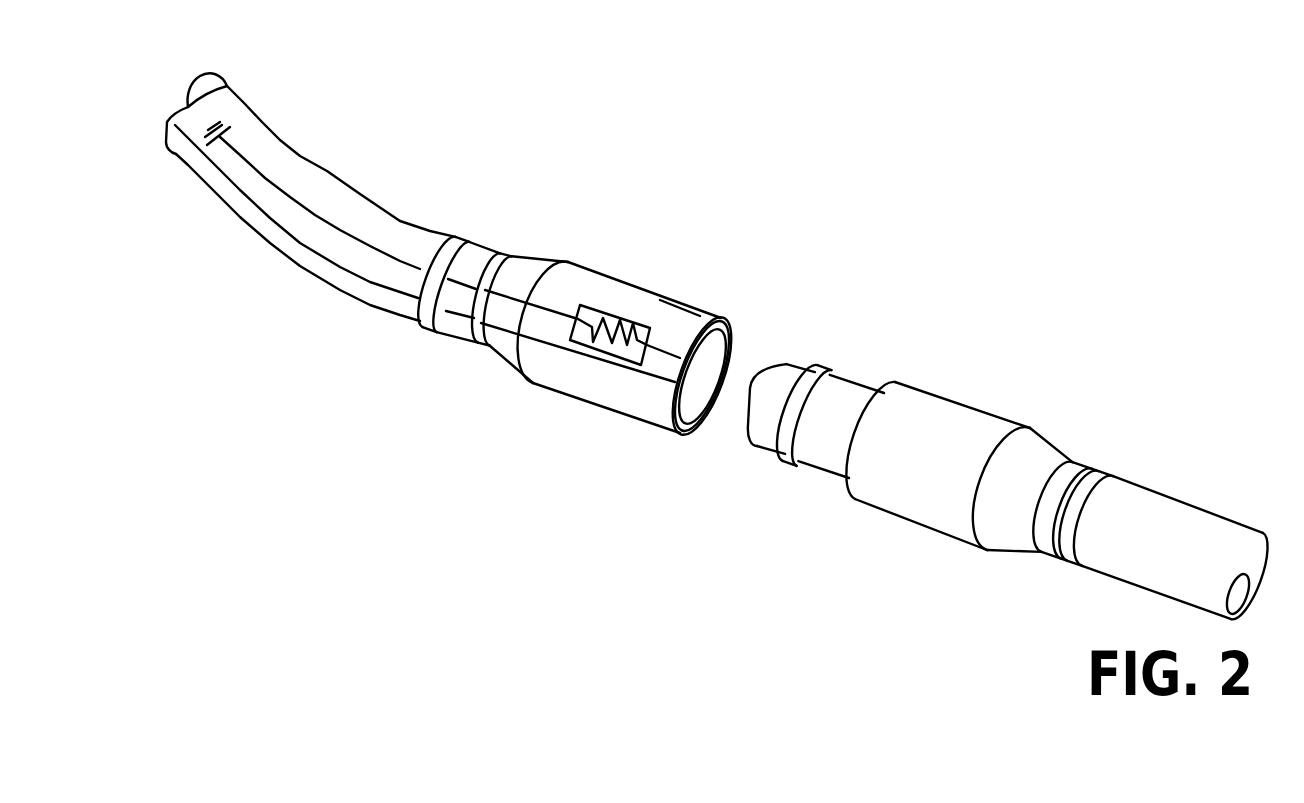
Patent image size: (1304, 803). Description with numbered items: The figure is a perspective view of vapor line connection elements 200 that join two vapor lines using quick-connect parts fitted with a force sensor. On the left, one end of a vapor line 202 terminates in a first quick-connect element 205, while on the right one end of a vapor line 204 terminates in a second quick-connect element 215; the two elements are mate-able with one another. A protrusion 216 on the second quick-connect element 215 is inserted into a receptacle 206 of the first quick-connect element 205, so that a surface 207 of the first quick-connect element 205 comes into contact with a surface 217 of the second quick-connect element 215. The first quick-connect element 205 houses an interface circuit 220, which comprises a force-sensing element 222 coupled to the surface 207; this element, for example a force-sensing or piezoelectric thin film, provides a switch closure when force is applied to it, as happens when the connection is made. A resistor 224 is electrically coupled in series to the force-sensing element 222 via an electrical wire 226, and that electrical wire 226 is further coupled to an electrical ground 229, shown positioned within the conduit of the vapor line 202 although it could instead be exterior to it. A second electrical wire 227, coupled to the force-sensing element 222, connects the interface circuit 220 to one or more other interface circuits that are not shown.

The vapor line connection elements 200 is at (1152, 188).
The vapor line 202 is at (328, 172).
The vapor line 204 is at (1166, 497).
The first quick-connect element 205 is at (645, 228).
The receptacle 206 is at (703, 365).
The surface 207 is at (713, 423).
The second quick-connect element 215 is at (928, 370).
The protrusion 216 is at (792, 365).
The surface 217 is at (841, 478).
The interface circuit 220 is at (670, 317).
The force-sensing element 222 is at (684, 437).
The resistor 224 is at (592, 348).
The electrical wire 226 is at (547, 312).
The electrical wire 227 is at (634, 372).
The electrical ground 229 is at (227, 116).